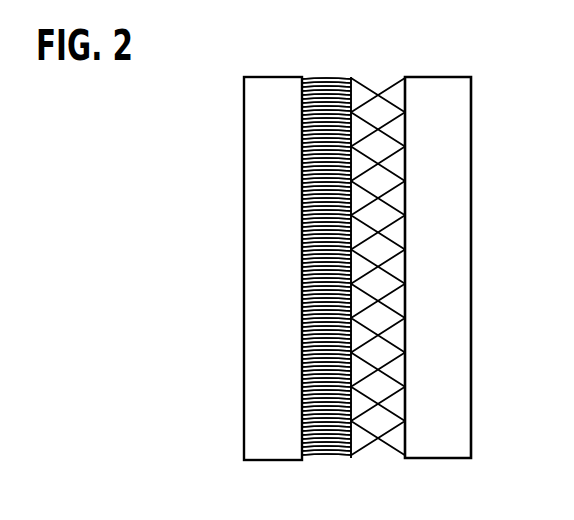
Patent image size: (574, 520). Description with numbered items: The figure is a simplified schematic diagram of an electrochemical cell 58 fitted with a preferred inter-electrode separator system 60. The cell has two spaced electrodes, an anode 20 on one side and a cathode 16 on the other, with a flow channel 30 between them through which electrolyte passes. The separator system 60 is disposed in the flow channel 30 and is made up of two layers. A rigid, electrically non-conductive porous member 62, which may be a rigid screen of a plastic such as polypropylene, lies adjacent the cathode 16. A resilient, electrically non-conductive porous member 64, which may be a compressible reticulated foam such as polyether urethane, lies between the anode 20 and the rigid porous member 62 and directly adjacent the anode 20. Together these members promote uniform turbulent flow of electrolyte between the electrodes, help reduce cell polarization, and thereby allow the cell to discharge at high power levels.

The cathode 16 is at (452, 107).
The anode 20 is at (283, 78).
The flow channel 30 is at (338, 465).
The electrochemical cell 58 is at (492, 171).
The inter-electrode separator system 60 is at (332, 50).
The rigid porous member 62 is at (384, 87).
The resilient porous member 64 is at (326, 82).